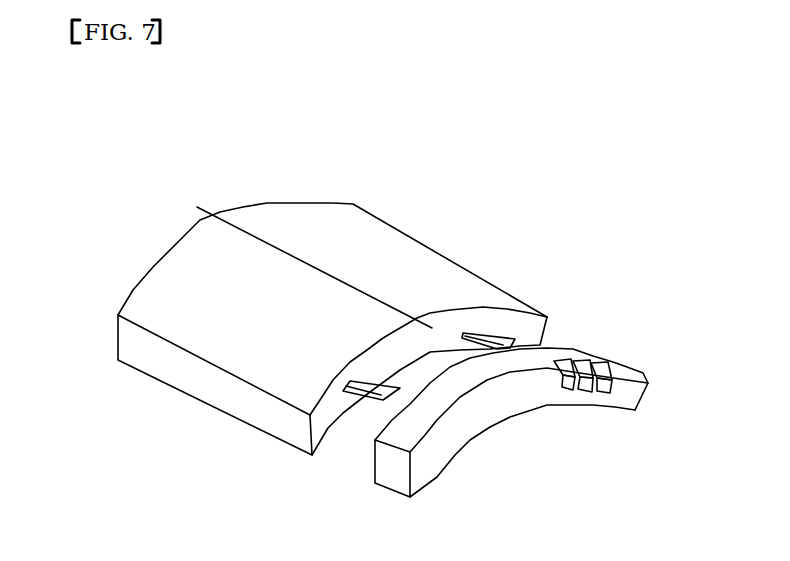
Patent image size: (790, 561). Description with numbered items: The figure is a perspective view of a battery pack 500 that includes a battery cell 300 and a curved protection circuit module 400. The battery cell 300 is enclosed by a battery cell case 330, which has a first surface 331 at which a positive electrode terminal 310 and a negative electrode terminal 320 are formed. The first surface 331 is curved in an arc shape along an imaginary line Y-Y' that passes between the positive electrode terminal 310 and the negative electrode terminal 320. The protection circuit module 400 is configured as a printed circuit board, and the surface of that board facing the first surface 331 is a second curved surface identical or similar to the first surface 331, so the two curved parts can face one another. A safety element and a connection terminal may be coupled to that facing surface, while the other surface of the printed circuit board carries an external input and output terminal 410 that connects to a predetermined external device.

The battery pack 500 is at (138, 149).
The battery cell 300 is at (323, 365).
The positive electrode terminal 310 is at (468, 312).
The negative electrode terminal 320 is at (364, 356).
The battery cell case 330 is at (323, 309).
The first surface 331 is at (429, 424).
The protection circuit module 400 is at (518, 403).
The external input and output terminal 410 is at (607, 351).